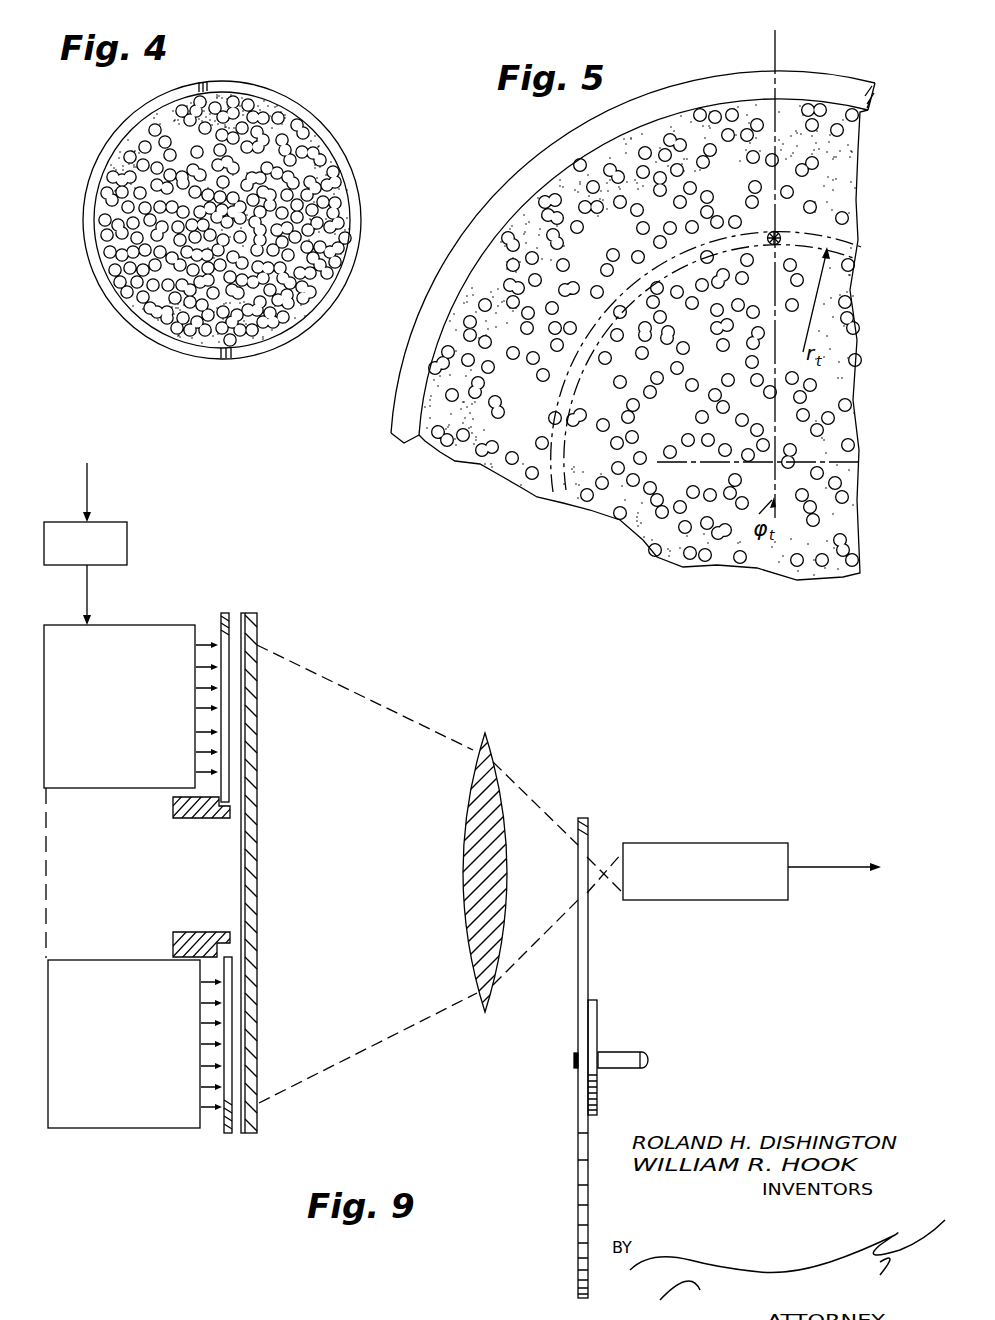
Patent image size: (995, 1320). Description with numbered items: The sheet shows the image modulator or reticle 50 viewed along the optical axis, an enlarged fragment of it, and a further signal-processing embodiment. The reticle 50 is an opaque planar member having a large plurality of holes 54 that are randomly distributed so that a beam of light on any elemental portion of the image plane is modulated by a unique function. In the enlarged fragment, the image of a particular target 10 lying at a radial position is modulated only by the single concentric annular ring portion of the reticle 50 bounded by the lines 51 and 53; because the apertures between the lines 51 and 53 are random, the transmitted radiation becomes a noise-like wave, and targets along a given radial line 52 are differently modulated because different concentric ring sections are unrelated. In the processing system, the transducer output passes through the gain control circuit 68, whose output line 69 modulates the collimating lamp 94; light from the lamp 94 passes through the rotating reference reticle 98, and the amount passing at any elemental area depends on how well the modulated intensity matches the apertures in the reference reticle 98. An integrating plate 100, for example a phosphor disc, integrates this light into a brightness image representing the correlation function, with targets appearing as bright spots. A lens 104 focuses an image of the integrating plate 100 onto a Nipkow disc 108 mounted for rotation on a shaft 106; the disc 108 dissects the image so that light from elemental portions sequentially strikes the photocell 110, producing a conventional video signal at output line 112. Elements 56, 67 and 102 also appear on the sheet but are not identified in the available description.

In FIG. 5, the target 10 is at (781, 231).
In FIG. 4, the reticle 50 is at (326, 119).
In FIG. 5, the reticle 50 is at (842, 75).
In FIG. 5, the line 51 is at (862, 232).
In FIG. 5, the radial line 52 is at (775, 62).
In FIG. 5, the line 53 is at (860, 296).
In FIG. 5, the holes 54 is at (866, 119).
In FIG. 5, the screen body material 56 is at (851, 179).
In FIG. 9, the input control signal 67 is at (87, 470).
In FIG. 9, the gain control circuit 68 is at (110, 522).
In FIG. 9, the output line 69 is at (87, 597).
In FIG. 9, the collimating lamp 94 is at (152, 625).
In FIG. 9, the reference reticle 98 is at (226, 613).
In FIG. 9, the integrating plate 100 is at (258, 628).
In FIG. 9, the mounting block 102 is at (173, 812).
In FIG. 9, the lens 104 is at (488, 745).
In FIG. 9, the shaft 106 is at (620, 1052).
In FIG. 9, the Nipkow disc 108 is at (587, 818).
In FIG. 9, the photocell 110 is at (740, 843).
In FIG. 9, the output line 112 is at (820, 865).